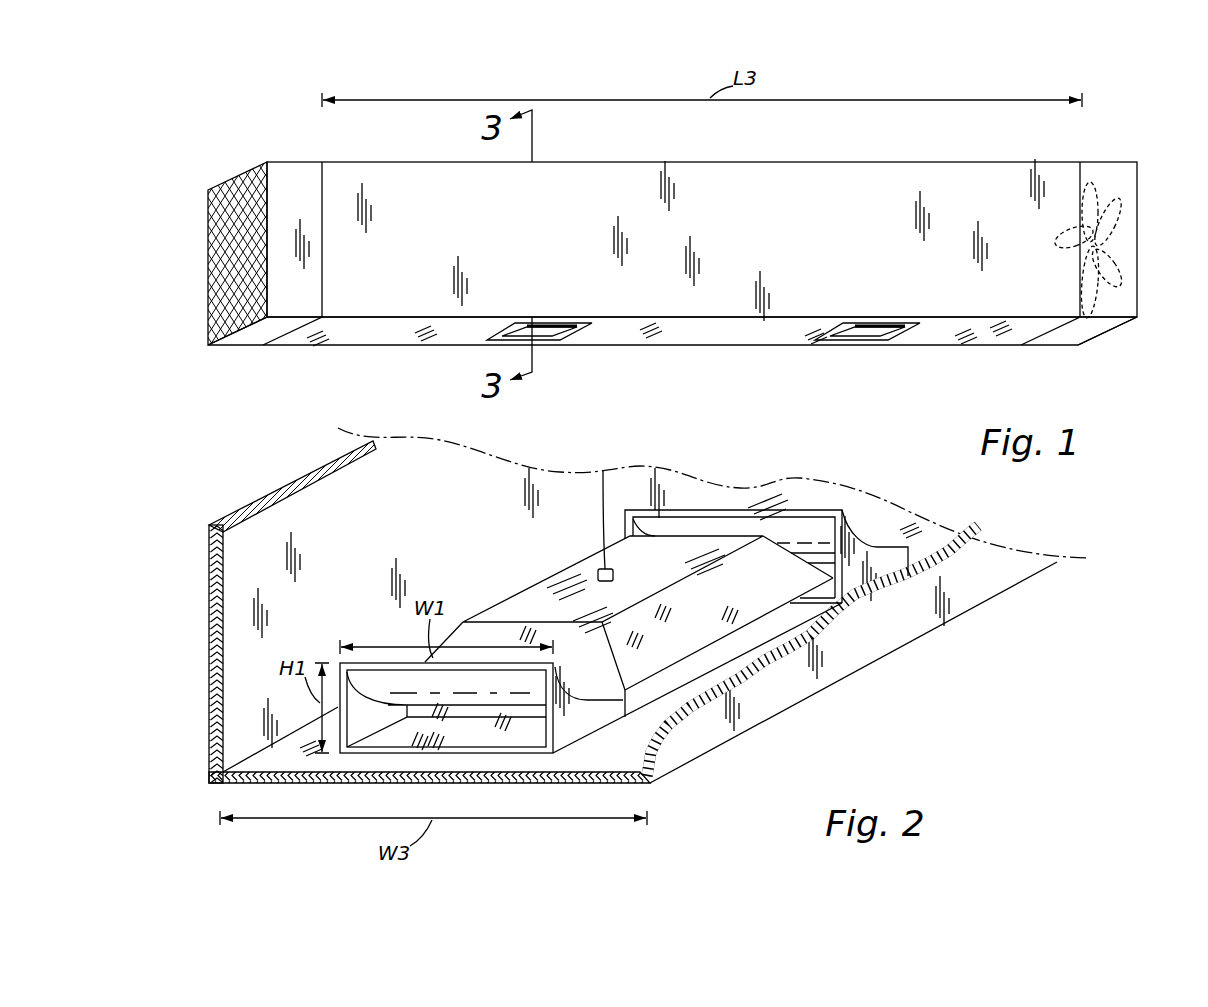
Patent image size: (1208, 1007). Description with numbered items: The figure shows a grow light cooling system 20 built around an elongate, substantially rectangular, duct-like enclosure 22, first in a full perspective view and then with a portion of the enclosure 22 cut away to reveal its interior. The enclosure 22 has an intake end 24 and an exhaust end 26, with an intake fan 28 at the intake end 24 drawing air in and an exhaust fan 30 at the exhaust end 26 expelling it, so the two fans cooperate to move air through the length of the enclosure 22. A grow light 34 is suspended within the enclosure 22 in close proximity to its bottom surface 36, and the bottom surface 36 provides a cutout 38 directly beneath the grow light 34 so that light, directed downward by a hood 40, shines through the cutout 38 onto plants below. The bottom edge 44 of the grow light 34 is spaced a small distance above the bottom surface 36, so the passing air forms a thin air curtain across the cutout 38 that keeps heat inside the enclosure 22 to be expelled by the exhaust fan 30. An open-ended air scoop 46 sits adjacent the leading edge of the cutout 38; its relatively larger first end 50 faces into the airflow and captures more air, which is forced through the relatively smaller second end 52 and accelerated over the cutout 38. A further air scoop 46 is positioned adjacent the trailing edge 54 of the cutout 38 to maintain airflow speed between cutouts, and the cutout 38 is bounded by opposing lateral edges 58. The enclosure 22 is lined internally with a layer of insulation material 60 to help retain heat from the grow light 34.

In FIG. 1, the grow light cooling system 20 is at (222, 124).
In FIG. 1, the elongate enclosure 22 is at (1072, 155).
In FIG. 2, the elongate enclosure 22 is at (205, 556).
In FIG. 1, the intake end 24 is at (297, 342).
In FIG. 1, the exhaust end 26 is at (1014, 342).
In FIG. 1, the intake fan 28 is at (257, 337).
In FIG. 1, the exhaust fan 30 is at (1130, 180).
In FIG. 2, the grow light 34 is at (579, 553).
In FIG. 1, the bottom surface 36 is at (688, 347).
In FIG. 2, the bottom surface 36 is at (655, 779).
In FIG. 1, the cutout 38 is at (548, 340).
In FIG. 2, the cutout 38 is at (700, 714).
In FIG. 2, the hood 40 is at (523, 600).
In FIG. 2, the bottom edge 44 is at (755, 627).
In FIG. 2, the air scoop 46 is at (328, 652).
In FIG. 2, the first end 50 is at (785, 517).
In FIG. 2, the second end 52 is at (928, 576).
In FIG. 2, the trailing edge 54 is at (830, 620).
In FIG. 2, the lateral edges 58 is at (680, 698).
In FIG. 2, the insulation material 60 is at (243, 530).